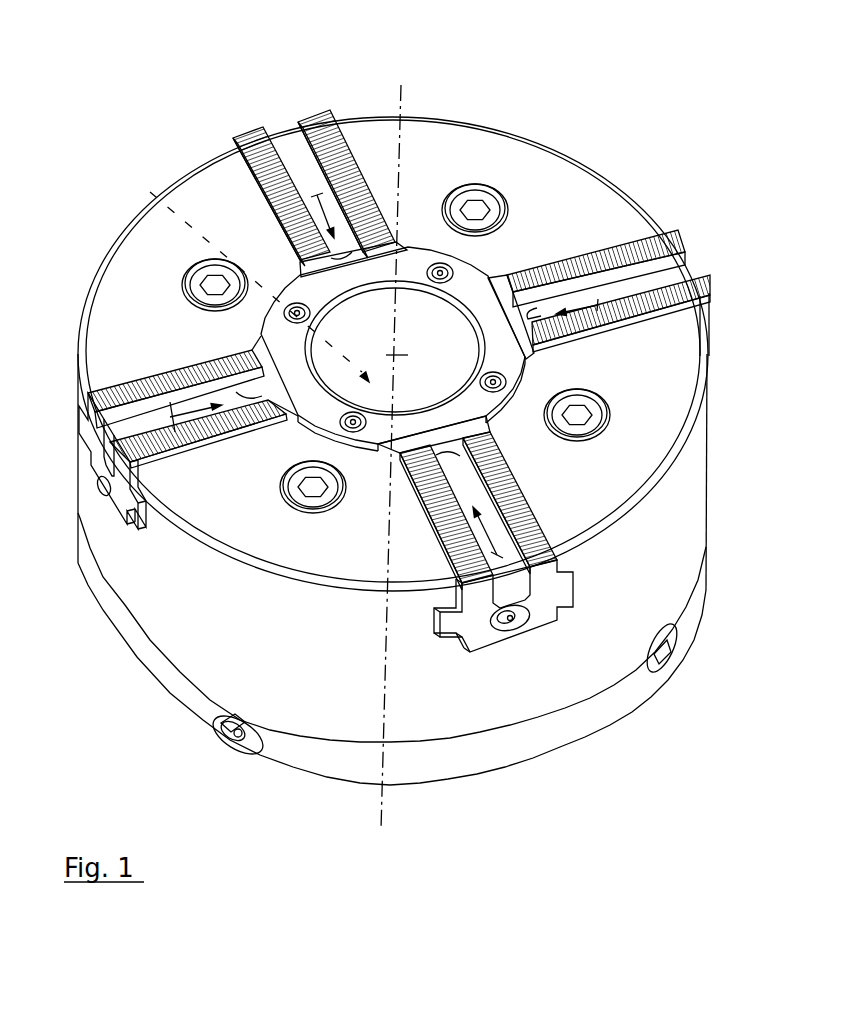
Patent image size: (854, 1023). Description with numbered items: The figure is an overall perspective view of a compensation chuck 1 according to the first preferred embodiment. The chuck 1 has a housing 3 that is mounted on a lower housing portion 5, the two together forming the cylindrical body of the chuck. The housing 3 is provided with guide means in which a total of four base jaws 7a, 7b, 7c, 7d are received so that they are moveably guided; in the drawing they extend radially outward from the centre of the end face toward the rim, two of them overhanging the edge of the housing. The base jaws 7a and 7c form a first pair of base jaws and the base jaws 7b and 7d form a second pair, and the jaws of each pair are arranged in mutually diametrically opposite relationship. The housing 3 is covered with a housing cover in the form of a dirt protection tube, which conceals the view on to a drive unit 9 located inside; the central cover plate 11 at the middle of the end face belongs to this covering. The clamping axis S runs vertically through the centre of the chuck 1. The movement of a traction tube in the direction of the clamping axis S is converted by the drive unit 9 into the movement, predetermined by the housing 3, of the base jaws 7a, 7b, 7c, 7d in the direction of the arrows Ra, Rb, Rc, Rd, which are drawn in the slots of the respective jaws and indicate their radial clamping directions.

The compensation chuck 1 is at (127, 66).
The housing 3 is at (534, 174).
The lower housing portion 5 is at (307, 758).
The base jaw 7a is at (150, 429).
The base jaw 7b is at (320, 161).
The base jaw 7c is at (625, 298).
The base jaw 7d is at (518, 604).
The drive unit 9 is at (136, 186).
The central plate 11 is at (405, 272).
The clamping axis S is at (407, 98).
The arrow (direction of movement of base jaw 7a) Ra is at (169, 401).
The arrow (direction of movement of base jaw 7b) Rb is at (322, 196).
The arrow (direction of movement of base jaw 7c) Rc is at (600, 307).
The arrow (direction of movement of base jaw 7d) Rd is at (485, 528).